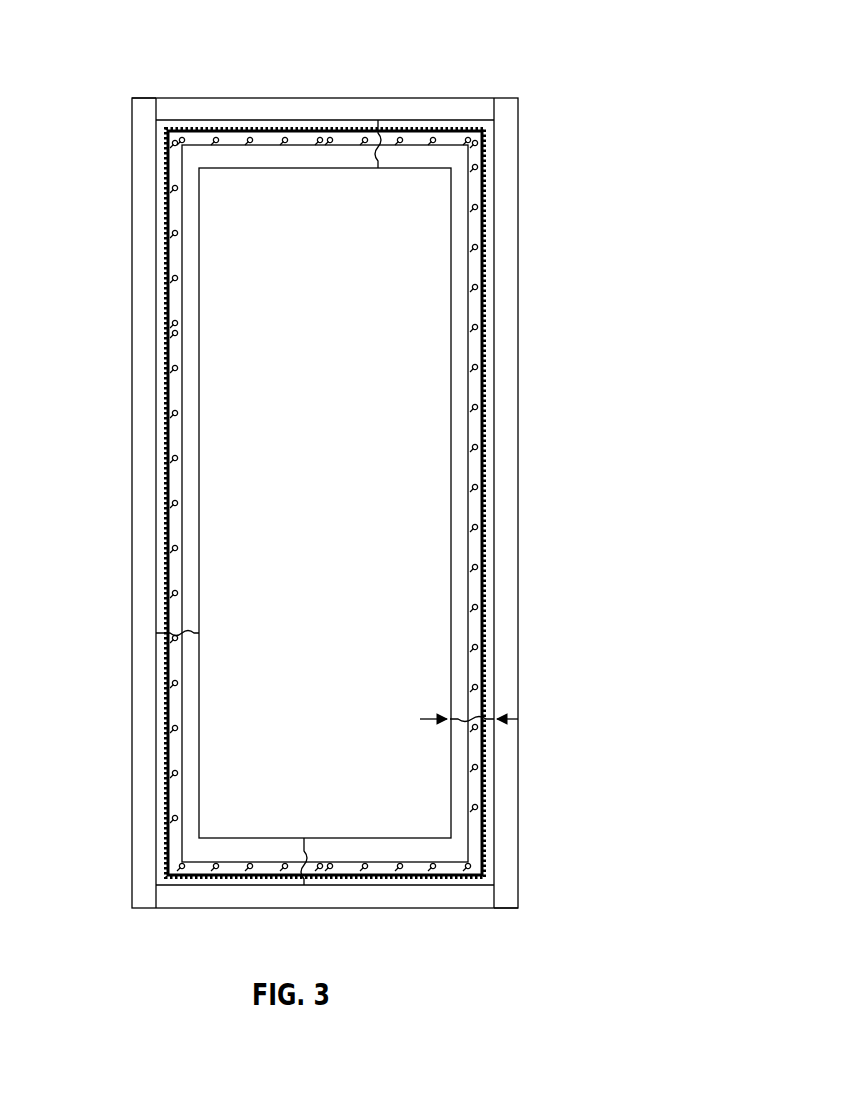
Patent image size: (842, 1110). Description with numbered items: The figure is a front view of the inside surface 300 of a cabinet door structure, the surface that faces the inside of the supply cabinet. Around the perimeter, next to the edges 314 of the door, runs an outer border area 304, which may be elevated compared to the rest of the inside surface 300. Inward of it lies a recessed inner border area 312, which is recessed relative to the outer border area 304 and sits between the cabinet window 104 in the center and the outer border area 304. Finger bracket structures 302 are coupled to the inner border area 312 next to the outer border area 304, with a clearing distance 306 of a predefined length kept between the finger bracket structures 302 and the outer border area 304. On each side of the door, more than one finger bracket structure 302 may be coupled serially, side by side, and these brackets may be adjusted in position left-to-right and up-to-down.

The inside surface 300 is at (572, 31).
The finger bracket structures 302 is at (345, 131).
The outer border area 304 is at (443, 115).
The clearing distance 306 is at (258, 129).
The recessed inner border area 312 is at (378, 168).
The edges 314 is at (188, 95).
The cabinet window 104 is at (330, 534).